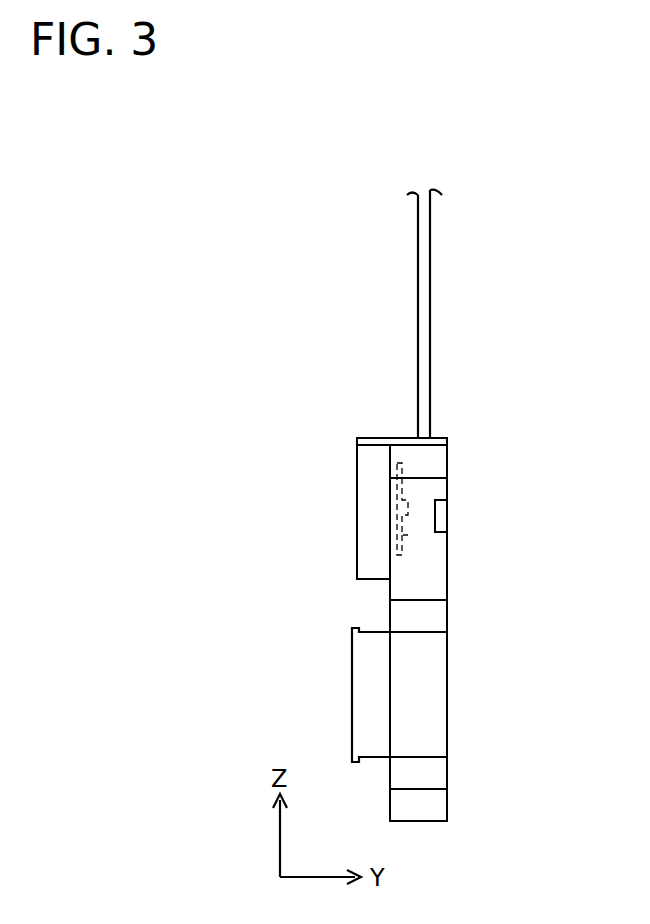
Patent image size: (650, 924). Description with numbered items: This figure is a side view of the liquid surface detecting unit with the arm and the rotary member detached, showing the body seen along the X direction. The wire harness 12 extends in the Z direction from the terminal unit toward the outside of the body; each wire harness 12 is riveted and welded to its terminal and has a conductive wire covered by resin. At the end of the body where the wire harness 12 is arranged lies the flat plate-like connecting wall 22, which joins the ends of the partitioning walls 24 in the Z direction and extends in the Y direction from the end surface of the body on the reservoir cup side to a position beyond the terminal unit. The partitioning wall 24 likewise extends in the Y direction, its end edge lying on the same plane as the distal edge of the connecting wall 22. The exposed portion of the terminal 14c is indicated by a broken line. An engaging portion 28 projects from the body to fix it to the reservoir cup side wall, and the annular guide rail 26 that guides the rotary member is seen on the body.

The wire harness 12 is at (432, 316).
The connecting wall 22 is at (379, 439).
The partitioning wall 24 is at (370, 513).
The guide rail 26 is at (362, 693).
The engaging portion 28 is at (441, 516).
The terminal 14c is at (468, 524).